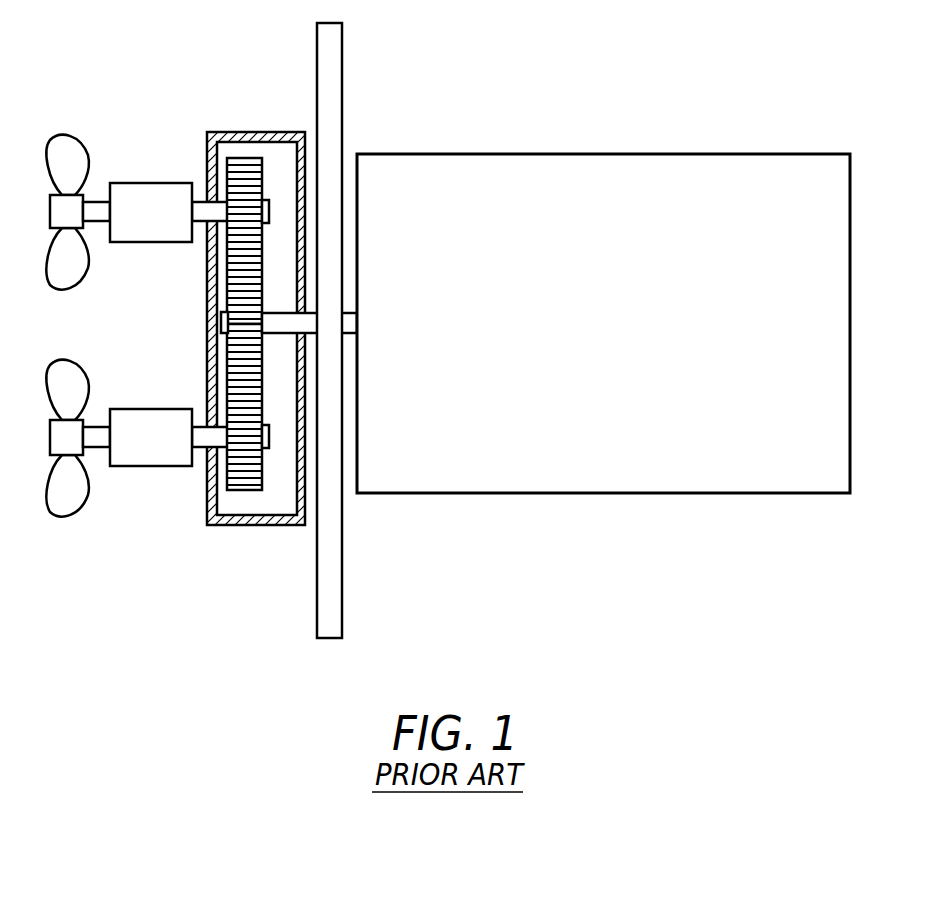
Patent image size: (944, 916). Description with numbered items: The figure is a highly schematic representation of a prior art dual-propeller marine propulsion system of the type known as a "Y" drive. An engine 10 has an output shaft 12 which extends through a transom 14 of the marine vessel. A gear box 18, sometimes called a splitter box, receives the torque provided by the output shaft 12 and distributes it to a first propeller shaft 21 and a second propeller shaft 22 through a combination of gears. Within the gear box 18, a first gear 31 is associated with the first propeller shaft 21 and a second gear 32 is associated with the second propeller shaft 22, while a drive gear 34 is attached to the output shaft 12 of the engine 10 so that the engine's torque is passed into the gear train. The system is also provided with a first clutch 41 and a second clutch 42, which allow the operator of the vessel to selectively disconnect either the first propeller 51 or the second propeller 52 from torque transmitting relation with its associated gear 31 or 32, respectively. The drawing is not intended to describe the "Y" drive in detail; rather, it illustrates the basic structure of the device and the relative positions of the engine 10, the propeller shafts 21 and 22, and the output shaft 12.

The engine 10 is at (618, 168).
The output shaft 12 is at (283, 320).
The transom 14 is at (342, 603).
The gear box 18 is at (237, 510).
The first propeller shaft 21 is at (98, 205).
The second propeller shaft 22 is at (96, 430).
The first gear 31 is at (243, 168).
The second gear 32 is at (252, 457).
The drive gear 34 is at (232, 322).
The first clutch 41 is at (150, 190).
The second clutch 42 is at (150, 460).
The first propeller 51 is at (70, 150).
The second propeller 52 is at (53, 387).